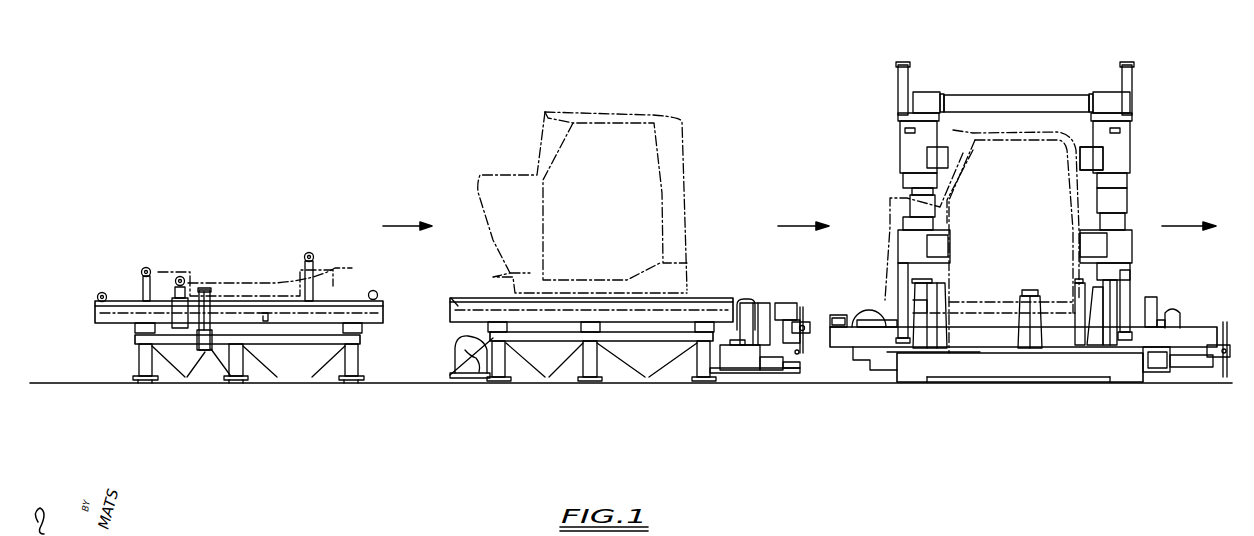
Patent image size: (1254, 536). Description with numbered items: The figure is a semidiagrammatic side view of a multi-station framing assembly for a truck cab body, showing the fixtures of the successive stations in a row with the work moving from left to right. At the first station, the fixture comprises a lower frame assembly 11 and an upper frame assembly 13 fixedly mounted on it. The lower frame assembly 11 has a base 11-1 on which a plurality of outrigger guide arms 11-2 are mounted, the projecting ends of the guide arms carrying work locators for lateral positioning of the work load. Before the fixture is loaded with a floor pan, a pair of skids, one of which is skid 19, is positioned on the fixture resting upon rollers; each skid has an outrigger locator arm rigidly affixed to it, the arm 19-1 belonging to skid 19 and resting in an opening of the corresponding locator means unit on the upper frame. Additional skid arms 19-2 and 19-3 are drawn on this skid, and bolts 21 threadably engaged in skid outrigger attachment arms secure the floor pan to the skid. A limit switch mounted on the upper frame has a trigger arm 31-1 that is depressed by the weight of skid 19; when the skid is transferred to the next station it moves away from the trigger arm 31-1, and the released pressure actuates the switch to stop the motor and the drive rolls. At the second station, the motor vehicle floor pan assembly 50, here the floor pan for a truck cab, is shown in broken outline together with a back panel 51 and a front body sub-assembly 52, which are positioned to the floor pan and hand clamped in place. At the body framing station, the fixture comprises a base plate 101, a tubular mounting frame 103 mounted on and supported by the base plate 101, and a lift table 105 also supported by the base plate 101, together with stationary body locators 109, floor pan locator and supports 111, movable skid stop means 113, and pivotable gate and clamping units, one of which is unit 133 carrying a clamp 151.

The lower frame assembly 11 is at (362, 335).
The base 11-1 is at (350, 362).
The outrigger guide arm 11-2 is at (200, 330).
The upper frame assembly 13 is at (131, 336).
The skid 19 is at (450, 298).
The outrigger locator arm 19-1 is at (184, 284).
The locating pin 19-2 is at (142, 288).
The locating pin 19-3 is at (330, 280).
The bolt 21 is at (178, 278).
The trigger arm 31-1 is at (264, 322).
The motor vehicle floor pan assembly 50 is at (345, 294).
The back panel 51 is at (687, 203).
The front body sub-assembly 52 is at (503, 170).
The base plate 101 is at (1095, 367).
The tubular mounting frame 103 is at (1022, 100).
The lift table 105 is at (850, 338).
The stationary body locator 109 is at (1020, 307).
The floor pan locator and support 111 is at (1073, 290).
The movable skid stop means 113 is at (745, 307).
The pivotable gate and clamping unit 133 is at (1143, 163).
The clamp 151 is at (1083, 155).